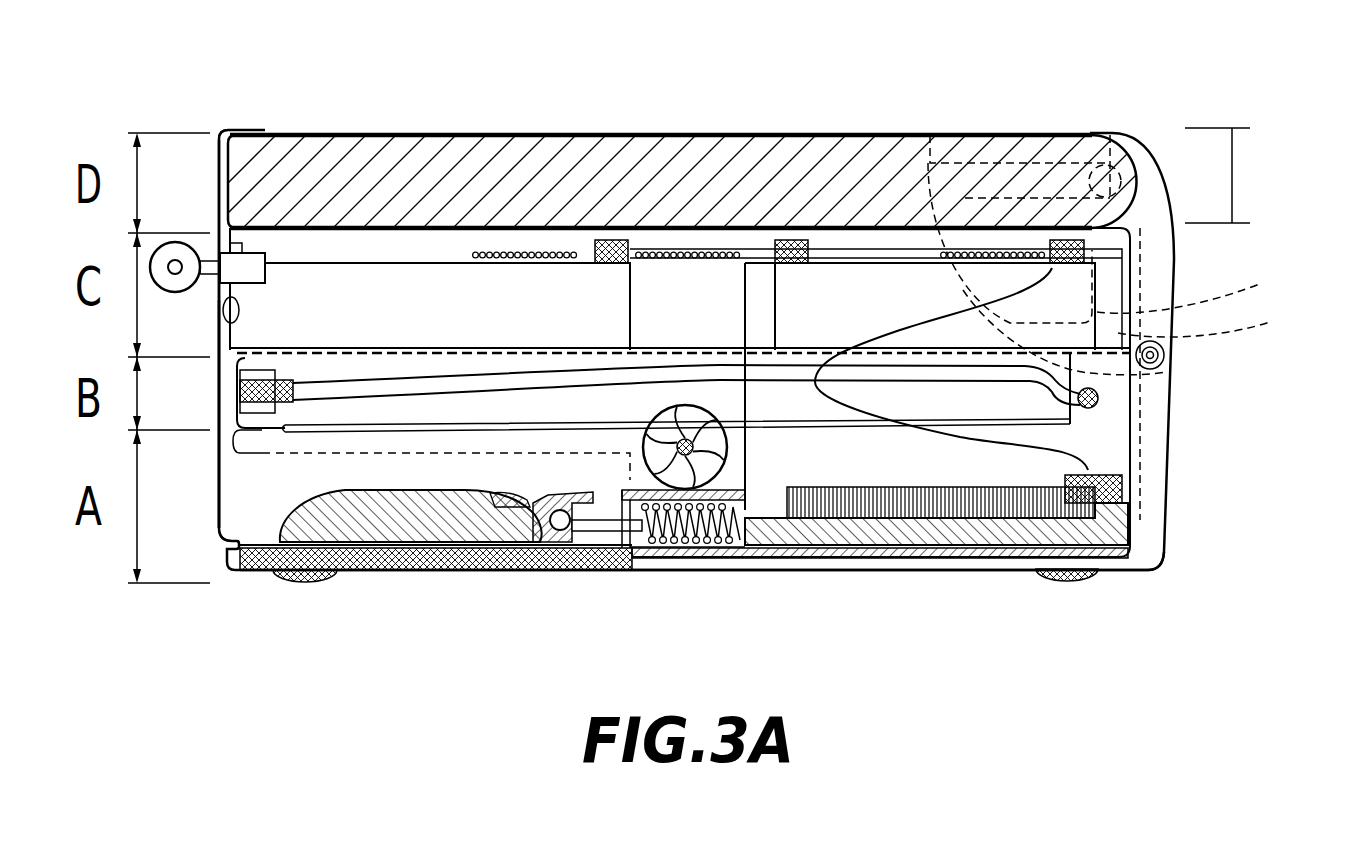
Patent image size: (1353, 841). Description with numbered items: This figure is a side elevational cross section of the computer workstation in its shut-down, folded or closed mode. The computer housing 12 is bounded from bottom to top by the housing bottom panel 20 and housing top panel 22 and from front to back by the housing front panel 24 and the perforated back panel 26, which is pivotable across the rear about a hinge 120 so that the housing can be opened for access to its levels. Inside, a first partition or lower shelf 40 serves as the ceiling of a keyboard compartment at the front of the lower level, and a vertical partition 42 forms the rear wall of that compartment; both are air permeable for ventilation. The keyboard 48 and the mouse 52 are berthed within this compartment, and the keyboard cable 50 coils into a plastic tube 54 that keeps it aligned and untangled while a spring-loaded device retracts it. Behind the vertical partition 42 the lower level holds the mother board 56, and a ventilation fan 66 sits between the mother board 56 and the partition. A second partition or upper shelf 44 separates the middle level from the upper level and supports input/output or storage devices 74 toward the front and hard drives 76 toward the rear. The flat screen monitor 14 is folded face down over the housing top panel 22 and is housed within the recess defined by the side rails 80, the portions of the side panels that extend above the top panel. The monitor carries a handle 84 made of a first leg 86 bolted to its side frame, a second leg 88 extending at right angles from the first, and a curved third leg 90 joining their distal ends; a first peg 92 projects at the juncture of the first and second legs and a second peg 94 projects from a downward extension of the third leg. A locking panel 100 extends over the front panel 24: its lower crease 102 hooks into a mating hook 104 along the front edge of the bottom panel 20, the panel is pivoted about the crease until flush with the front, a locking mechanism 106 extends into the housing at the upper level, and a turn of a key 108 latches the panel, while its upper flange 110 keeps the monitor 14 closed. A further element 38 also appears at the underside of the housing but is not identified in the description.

The computer housing 12 is at (1237, 428).
The monitor 14 is at (625, 130).
The housing bottom panel 20 is at (897, 570).
The housing top panel 22 is at (710, 215).
The housing front panel 24 is at (222, 333).
The back panel 26 is at (1182, 513).
The rear foot 38 is at (1072, 577).
The first partition or lower shelf 40 is at (297, 455).
The vertical partition 42 is at (565, 545).
The second partition or upper shelf 44 is at (380, 352).
The keyboard 48 is at (595, 553).
The keyboard cable 50 is at (672, 553).
The mouse 52 is at (340, 525).
The plastic tube 54 is at (633, 553).
The mother board 56 is at (1000, 537).
The ventilation fan 66 is at (737, 553).
The input/output or storage devices 74 is at (525, 300).
The hard drives 76 is at (840, 300).
The side rails 80 is at (1218, 175).
The handle 84 is at (990, 135).
The first leg 86 is at (1055, 135).
The second leg 88 is at (1179, 285).
The third leg 90 is at (930, 135).
The first outwardly extending pin or peg 92 is at (1132, 136).
The second outwardly extending pin or peg 94 is at (1139, 328).
The locking panel 100 is at (205, 508).
The lower crease 102 is at (220, 545).
The mating hook 104 is at (240, 578).
The locking mechanism 106 is at (240, 266).
The key 108 is at (180, 258).
The upper flange 110 is at (253, 130).
The hinge 120 is at (1165, 360).